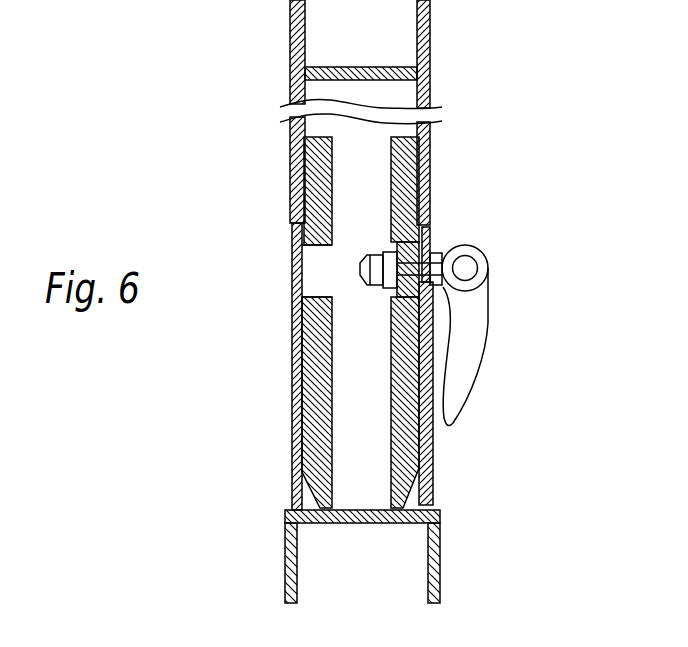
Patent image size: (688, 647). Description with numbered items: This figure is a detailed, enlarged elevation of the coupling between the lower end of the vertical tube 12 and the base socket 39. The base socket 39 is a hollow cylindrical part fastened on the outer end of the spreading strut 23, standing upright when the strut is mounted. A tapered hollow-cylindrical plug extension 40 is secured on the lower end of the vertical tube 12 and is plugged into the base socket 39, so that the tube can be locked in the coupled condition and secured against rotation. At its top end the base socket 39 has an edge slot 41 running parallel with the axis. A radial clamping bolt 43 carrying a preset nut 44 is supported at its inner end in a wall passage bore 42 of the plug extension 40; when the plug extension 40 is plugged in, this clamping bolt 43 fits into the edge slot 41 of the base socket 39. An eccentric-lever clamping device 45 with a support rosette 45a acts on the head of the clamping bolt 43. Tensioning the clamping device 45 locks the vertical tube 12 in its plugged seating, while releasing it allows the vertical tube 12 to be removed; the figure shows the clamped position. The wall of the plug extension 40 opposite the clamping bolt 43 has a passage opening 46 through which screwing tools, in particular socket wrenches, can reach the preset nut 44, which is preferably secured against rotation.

The vertical tube 12 is at (427, 61).
The spreading strut 23 is at (440, 520).
The base socket 39 is at (430, 440).
The plug extension 40 is at (316, 381).
The edge slot 41 is at (428, 238).
The wall passage bore 42 is at (398, 365).
The clamping bolt 43 is at (362, 272).
The preset nut 44 is at (388, 250).
The eccentric-lever clamping device 45 is at (495, 268).
The support rosette 45a is at (452, 307).
The passage opening 46 is at (312, 268).